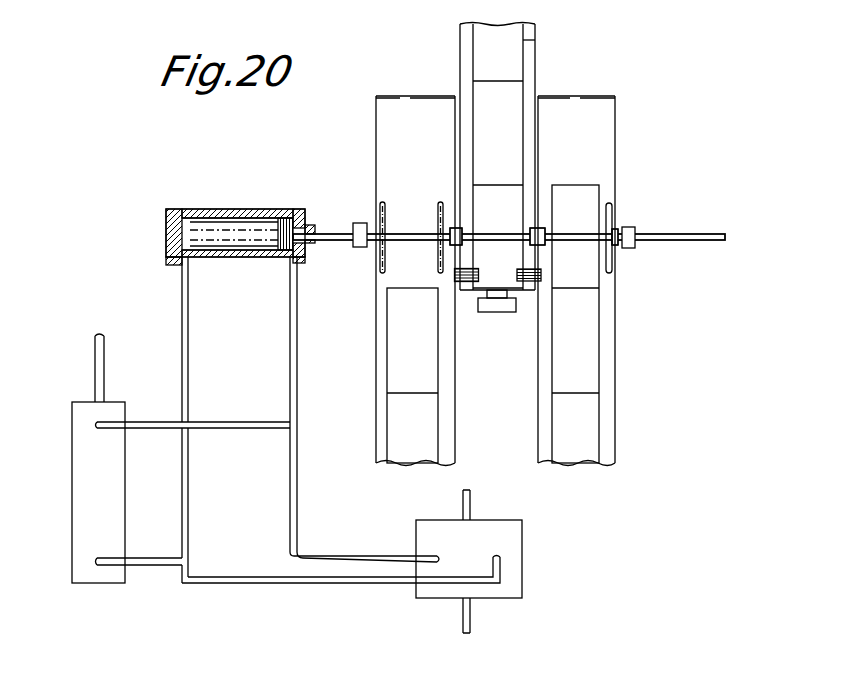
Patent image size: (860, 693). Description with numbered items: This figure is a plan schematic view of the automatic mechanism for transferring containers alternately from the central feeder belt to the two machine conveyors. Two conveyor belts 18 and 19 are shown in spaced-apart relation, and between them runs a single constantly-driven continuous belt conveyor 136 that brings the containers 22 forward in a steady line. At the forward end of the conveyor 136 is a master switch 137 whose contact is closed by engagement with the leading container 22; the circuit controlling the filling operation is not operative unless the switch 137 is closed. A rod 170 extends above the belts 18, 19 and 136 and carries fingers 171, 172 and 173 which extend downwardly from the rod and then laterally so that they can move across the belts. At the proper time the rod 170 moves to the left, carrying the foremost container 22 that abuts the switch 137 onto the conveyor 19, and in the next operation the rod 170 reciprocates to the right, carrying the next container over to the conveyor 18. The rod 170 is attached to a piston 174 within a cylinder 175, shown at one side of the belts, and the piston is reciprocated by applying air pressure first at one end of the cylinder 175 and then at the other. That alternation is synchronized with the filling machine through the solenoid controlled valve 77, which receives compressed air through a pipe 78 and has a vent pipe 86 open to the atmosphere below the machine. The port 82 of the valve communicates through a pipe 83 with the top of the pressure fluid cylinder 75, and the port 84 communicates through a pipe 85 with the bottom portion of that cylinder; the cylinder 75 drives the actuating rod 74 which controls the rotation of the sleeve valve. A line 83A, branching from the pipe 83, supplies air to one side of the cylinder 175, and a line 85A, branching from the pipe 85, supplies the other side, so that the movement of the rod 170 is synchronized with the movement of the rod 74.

The conveyor belt 18 is at (614, 410).
The conveyor belt 19 is at (452, 413).
The container 22 is at (515, 53).
The continuous belt conveyor 136 is at (532, 44).
The switch 137 is at (485, 312).
The rod 170 is at (326, 234).
The finger 171 is at (462, 204).
The finger 172 is at (532, 206).
The finger 173 is at (612, 215).
The piston 174 is at (285, 214).
The cylinder 175 is at (259, 211).
The actuating rod 74 is at (95, 366).
The pressure fluid cylinder 75 is at (73, 490).
The solenoid controlled valve 77 is at (505, 523).
The pipe 78 is at (470, 498).
The port 82 is at (438, 560).
The pipe 83 is at (322, 557).
The line 83A is at (298, 348).
The port 84 is at (501, 558).
The pipe 85 is at (290, 583).
The line 85A is at (187, 348).
The vent pipe 86 is at (470, 615).